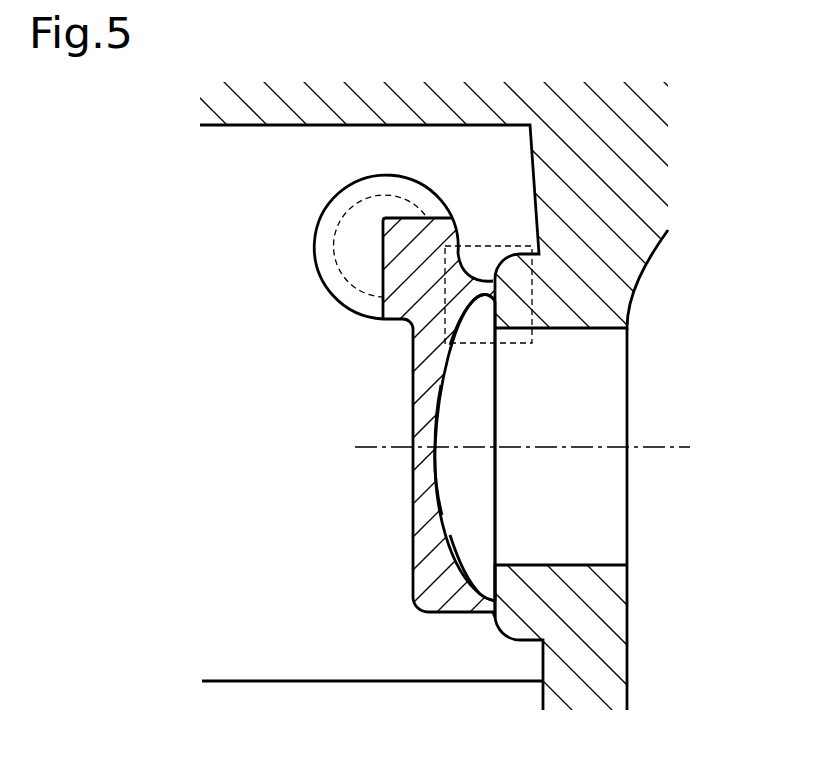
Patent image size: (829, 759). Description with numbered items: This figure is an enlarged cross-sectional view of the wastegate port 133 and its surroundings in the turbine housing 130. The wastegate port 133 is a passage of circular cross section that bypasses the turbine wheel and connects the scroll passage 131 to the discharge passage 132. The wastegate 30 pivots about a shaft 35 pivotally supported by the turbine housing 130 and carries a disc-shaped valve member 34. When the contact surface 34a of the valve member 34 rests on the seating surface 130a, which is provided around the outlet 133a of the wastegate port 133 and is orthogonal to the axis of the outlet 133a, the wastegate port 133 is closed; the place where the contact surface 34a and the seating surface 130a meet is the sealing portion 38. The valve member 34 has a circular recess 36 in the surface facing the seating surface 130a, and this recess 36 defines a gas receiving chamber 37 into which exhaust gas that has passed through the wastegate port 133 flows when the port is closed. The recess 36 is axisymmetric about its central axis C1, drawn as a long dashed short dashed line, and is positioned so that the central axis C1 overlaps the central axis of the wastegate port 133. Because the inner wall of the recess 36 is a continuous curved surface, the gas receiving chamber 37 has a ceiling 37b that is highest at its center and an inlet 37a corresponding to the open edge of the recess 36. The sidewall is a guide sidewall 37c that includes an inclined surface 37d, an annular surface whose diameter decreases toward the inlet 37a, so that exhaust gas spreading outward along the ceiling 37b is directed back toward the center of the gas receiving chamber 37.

The wastegate 30 is at (414, 379).
The valve member 34 is at (413, 556).
The contact surface 34a is at (497, 402).
The shaft 35 is at (331, 249).
The recess 36 is at (437, 465).
The gas receiving chamber 37 is at (482, 489).
The inlet 37a is at (487, 498).
The ceiling 37b is at (447, 392).
The guide sidewall 37c is at (485, 590).
The inclined surface 37d is at (490, 298).
The sealing portion 38 is at (488, 234).
The turbine housing 130 is at (244, 126).
The seating surface 130a is at (491, 613).
The scroll passage 131 is at (707, 664).
The discharge passage 132 is at (283, 660).
The wastegate port 133 is at (603, 562).
The outlet 133a is at (500, 563).
The central axis C1 is at (375, 445).